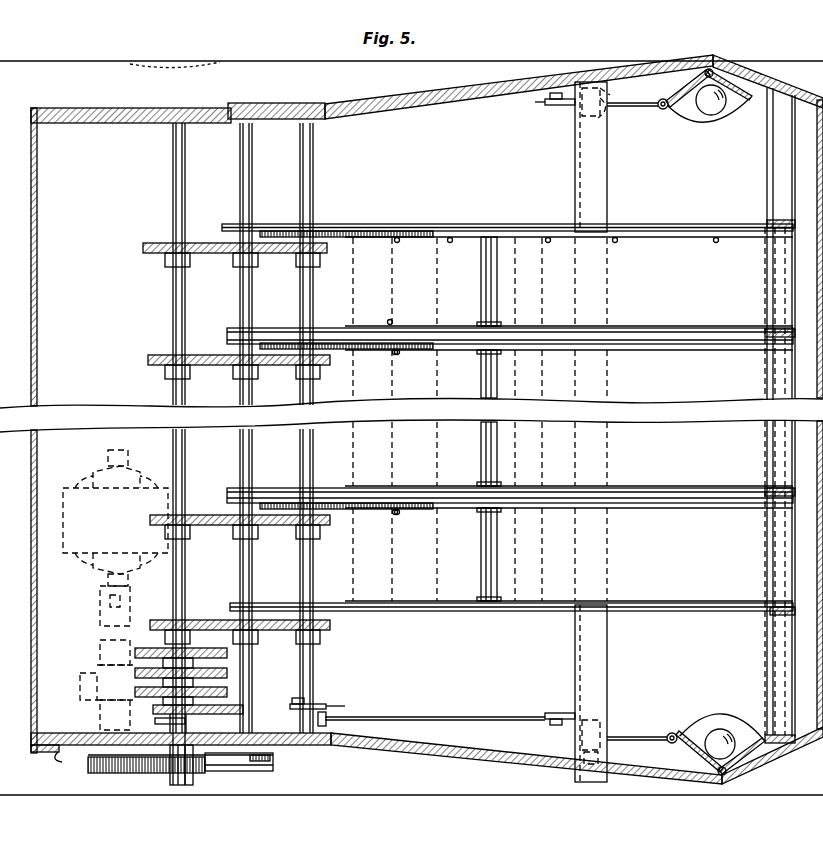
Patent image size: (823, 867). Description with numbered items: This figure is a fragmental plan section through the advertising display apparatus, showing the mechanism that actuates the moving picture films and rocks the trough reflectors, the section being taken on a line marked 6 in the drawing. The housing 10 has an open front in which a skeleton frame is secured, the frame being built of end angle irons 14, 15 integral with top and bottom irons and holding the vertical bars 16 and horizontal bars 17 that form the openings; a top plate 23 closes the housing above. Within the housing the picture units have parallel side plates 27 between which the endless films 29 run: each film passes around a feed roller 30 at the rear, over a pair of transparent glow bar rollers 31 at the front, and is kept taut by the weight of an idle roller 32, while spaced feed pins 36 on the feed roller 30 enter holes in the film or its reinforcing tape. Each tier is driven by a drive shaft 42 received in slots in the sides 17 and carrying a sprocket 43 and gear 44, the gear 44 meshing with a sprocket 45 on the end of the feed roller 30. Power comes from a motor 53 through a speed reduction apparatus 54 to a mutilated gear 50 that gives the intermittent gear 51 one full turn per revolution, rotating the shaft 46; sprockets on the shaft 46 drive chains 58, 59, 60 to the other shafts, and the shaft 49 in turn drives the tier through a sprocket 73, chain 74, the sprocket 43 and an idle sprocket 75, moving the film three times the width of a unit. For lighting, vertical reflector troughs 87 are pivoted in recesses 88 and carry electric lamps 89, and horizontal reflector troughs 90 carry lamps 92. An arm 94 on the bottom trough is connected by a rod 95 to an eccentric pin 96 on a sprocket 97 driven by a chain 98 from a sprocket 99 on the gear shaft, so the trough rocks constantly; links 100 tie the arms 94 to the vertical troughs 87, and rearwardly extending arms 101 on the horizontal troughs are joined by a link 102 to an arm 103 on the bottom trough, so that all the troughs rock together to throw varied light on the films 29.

The section line 6- 6 is at (68, 694).
The housing 10 is at (402, 97).
The end angle iron 14 is at (770, 735).
The end angle iron 15 is at (778, 411).
The vertical bar 16 is at (778, 220).
The horizontal bar 17 is at (783, 194).
The top plate 23 is at (174, 62).
The side plate 27 is at (223, 228).
The endless film 29 is at (338, 566).
The feed roller 30 is at (348, 280).
The transparent glow bar roller 31 is at (765, 224).
The idle roller 32 is at (498, 278).
The feed pin 36 is at (393, 244).
The drive shaft 42 is at (313, 196).
The sprocket wheel 43 is at (320, 258).
The gear wheel 44 is at (332, 230).
The sprocket 45 is at (388, 230).
The shaft 46 is at (178, 779).
The shaft 49 is at (186, 207).
The mutilated gear 50 is at (90, 773).
The intermittent gear 51 is at (200, 771).
The motor 53 is at (80, 550).
The speed reduction apparatus 54 is at (97, 675).
The chain 58 is at (158, 706).
The chain 59 is at (135, 674).
The chain 60 is at (163, 650).
The sprocket 73 is at (190, 262).
The chain 74 is at (280, 254).
The idle sprocket 75 is at (238, 262).
The vertical reflector trough 87 is at (715, 422).
The recess 88 is at (656, 421).
The electric lamp 89 is at (708, 112).
The horizontal reflector trough 90 is at (575, 162).
The lamp 92 is at (600, 100).
The arm 94 is at (602, 120).
The rod 95 is at (450, 716).
The eccentric pin 96 is at (327, 724).
The sprocket 97 is at (326, 706).
The chain 98 is at (296, 697).
The sprocket 99 is at (72, 752).
The link 100 is at (638, 107).
The rearwardly extending arm 101 is at (558, 106).
The link 102 is at (548, 107).
The arm 103 is at (556, 712).